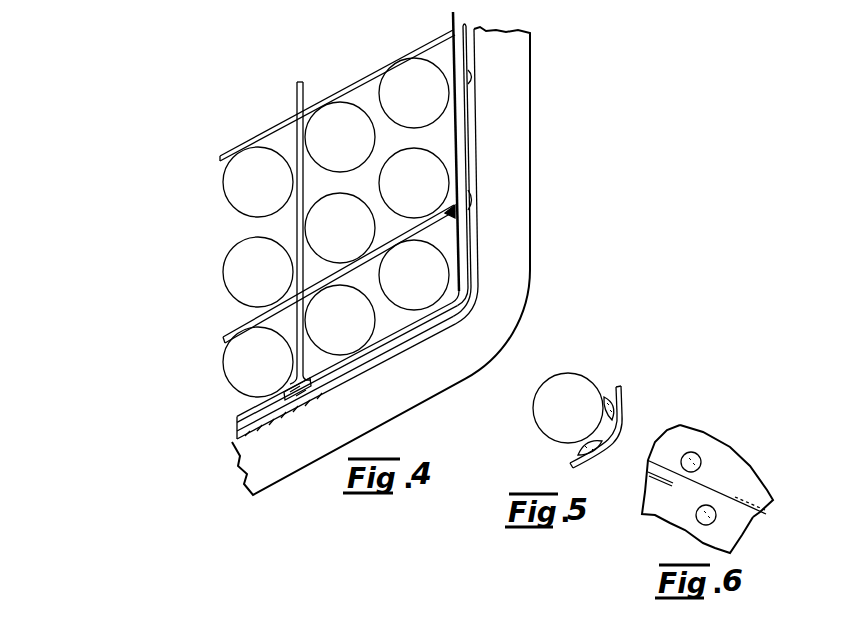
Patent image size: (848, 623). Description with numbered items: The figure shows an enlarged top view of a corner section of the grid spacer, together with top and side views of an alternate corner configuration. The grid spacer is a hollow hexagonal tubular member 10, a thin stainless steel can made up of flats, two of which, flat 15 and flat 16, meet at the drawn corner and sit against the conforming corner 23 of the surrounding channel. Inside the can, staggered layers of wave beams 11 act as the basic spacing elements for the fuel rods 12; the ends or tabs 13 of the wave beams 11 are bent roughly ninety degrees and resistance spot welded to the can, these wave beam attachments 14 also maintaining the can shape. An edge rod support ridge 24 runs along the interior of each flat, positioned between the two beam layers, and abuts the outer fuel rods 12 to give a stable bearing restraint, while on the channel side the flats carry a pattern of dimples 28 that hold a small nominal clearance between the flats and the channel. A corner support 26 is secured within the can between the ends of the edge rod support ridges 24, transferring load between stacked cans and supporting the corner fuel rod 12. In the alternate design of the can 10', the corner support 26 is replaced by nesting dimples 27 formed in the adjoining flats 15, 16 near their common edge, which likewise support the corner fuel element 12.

In FIG. 4, the tubular member 10 is at (533, 128).
In FIG. 6, the can 10' is at (795, 480).
In FIG. 4, the wave beams 11 is at (297, 97).
In FIG. 4, the fuel rod 12 is at (340, 127).
In FIG. 5, the fuel rod 12 is at (577, 387).
In FIG. 4, the tabs 13 is at (333, 381).
In FIG. 4, the wave beam attachments 14 is at (250, 394).
In FIG. 4, the flat 15 is at (470, 53).
In FIG. 5, the flat 15 is at (624, 388).
In FIG. 6, the flat 15 is at (715, 450).
In FIG. 4, the flat 16 is at (433, 332).
In FIG. 5, the flat 16 is at (571, 466).
In FIG. 6, the flat 16 is at (687, 521).
In FIG. 4, the corner 23 is at (524, 318).
In FIG. 4, the edge rod support ridge 24 is at (448, 226).
In FIG. 4, the corner support 26 is at (451, 292).
In FIG. 5, the nesting dimples 27 is at (612, 409).
In FIG. 6, the nesting dimples 27 is at (686, 470).
In FIG. 4, the dimples 28 is at (471, 79).